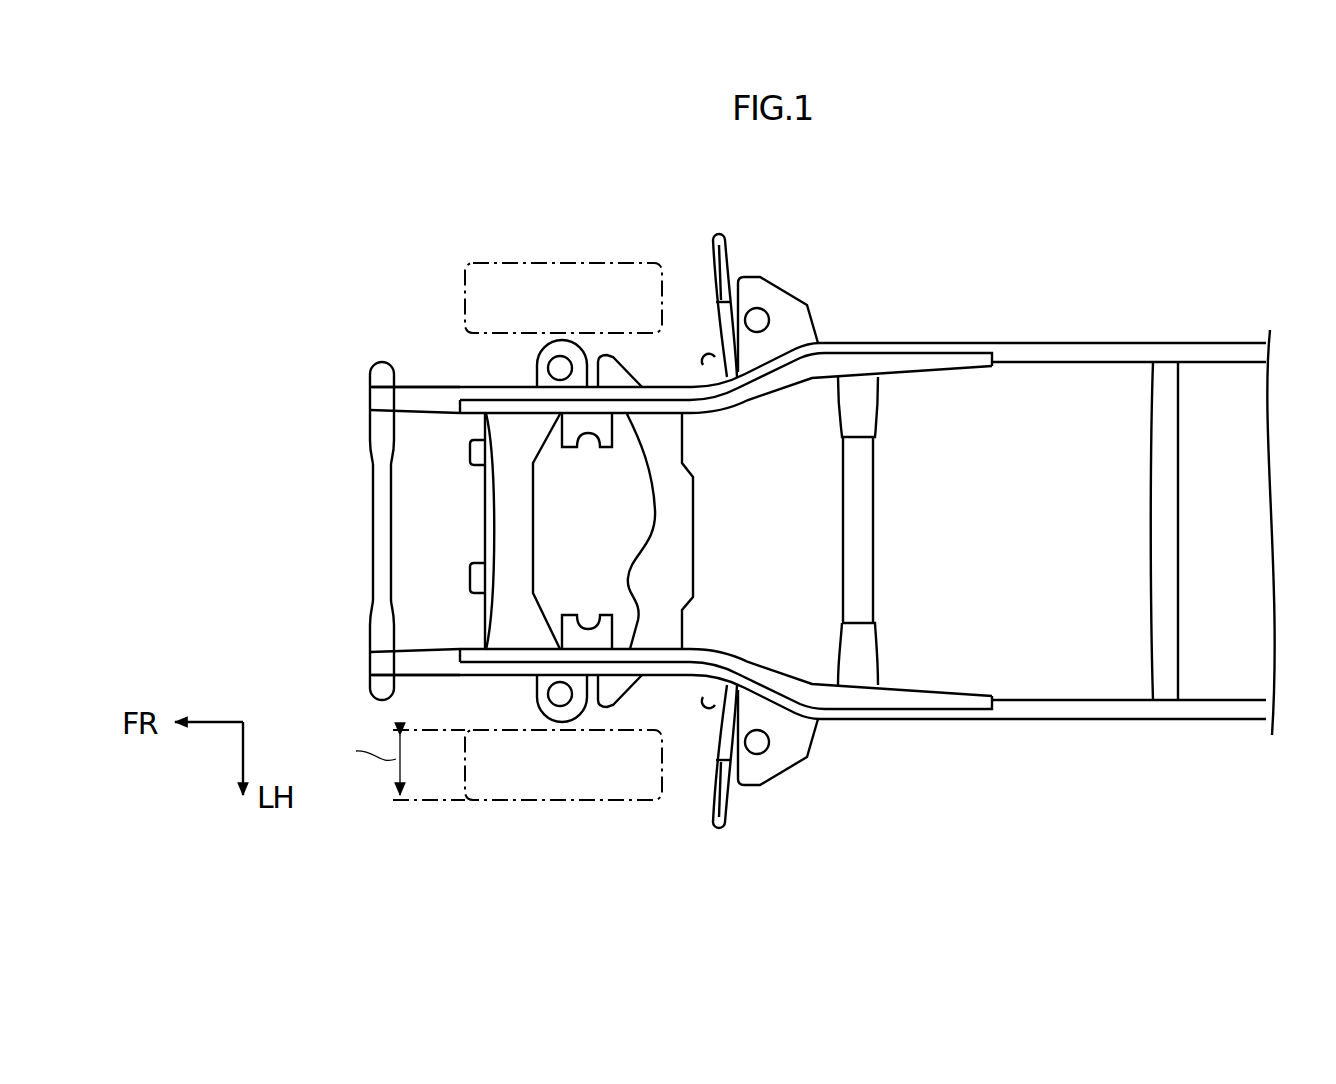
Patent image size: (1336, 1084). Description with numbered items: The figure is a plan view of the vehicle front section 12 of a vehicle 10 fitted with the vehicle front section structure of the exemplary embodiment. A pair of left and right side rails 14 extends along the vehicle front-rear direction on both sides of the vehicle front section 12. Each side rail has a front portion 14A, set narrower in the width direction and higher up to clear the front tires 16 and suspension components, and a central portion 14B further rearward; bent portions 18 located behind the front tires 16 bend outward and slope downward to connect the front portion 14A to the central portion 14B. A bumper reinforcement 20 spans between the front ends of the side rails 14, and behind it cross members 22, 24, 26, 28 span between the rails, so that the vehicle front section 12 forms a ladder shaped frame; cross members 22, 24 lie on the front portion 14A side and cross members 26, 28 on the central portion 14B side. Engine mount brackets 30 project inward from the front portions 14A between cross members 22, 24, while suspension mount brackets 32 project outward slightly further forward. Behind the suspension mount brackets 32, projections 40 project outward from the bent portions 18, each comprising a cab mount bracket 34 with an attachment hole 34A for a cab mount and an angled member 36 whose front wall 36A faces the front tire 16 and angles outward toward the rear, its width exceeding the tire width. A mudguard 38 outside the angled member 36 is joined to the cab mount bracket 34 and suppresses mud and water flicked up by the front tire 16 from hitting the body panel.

The vehicle 10 is at (767, 510).
The vehicle front section 12 is at (767, 510).
The side rails 14 is at (1067, 340).
The front portion 14A is at (447, 383).
The central portion 14B is at (1193, 342).
The front tires 16 is at (522, 262).
The bent portions 18 is at (768, 387).
The bumper reinforcement 20 is at (370, 477).
The cross member 22 is at (497, 515).
The cross member 24 is at (613, 531).
The cross member 26 is at (865, 516).
The cross member 28 is at (1170, 493).
The engine mount brackets 30 is at (587, 438).
The suspension mount brackets 32 is at (590, 352).
The cab mount bracket 34 is at (853, 528).
The attachment hole 34A is at (770, 316).
The angled member 36 is at (716, 532).
The front wall 36A is at (707, 363).
The mudguard 38 is at (731, 253).
The projections 40 is at (795, 532).